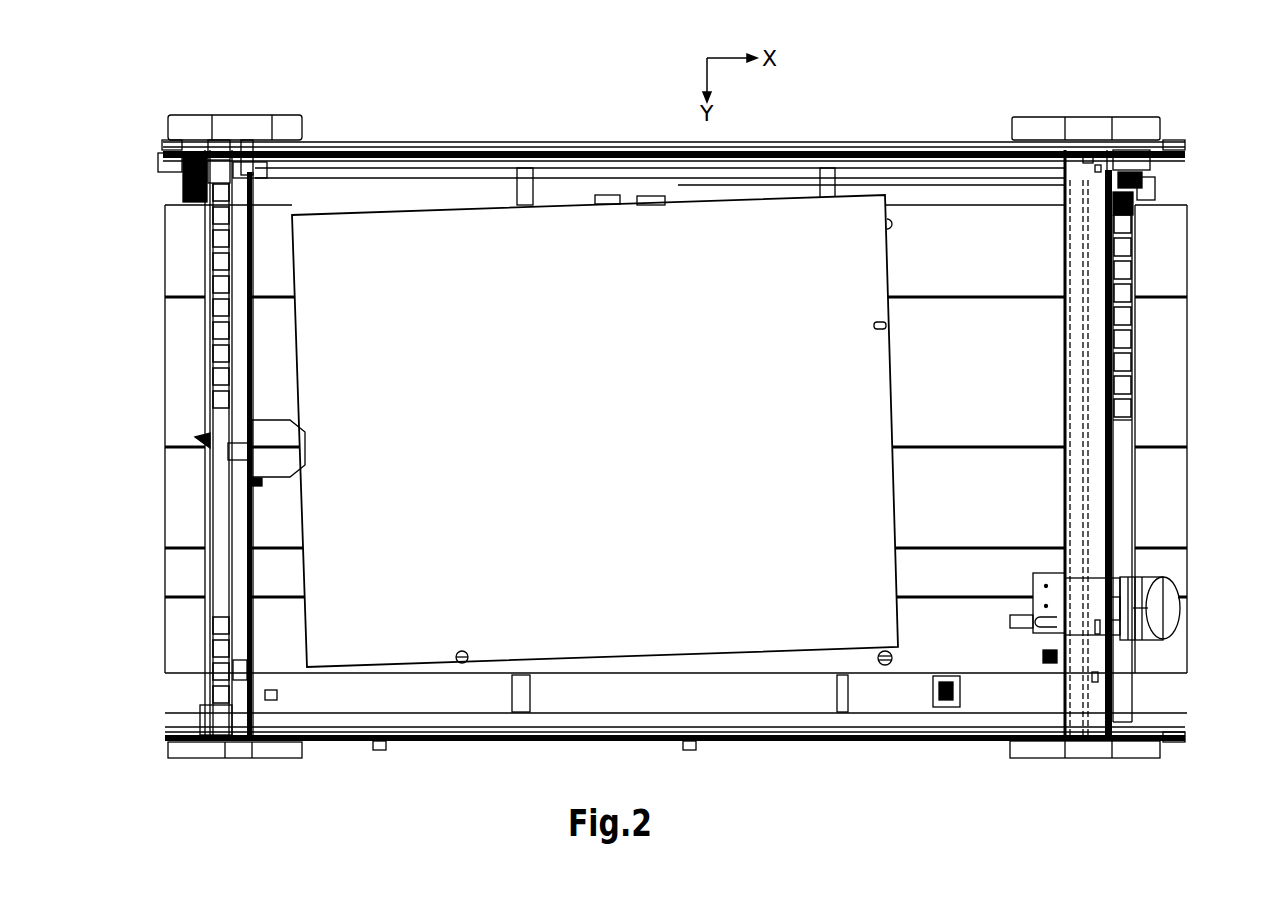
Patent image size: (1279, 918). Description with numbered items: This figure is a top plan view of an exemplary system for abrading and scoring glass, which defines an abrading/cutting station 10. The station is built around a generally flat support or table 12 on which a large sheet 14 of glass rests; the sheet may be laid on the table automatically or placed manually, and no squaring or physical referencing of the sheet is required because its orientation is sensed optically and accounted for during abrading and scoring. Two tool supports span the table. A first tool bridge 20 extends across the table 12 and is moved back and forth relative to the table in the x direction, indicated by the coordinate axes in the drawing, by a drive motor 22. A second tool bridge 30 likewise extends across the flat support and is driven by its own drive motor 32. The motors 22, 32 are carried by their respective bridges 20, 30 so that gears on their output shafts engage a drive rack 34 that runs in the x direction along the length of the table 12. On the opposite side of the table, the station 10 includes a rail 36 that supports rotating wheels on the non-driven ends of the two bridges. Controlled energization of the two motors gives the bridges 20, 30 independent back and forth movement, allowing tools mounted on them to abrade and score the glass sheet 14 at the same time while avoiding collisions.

The abrading/cutting station 10 is at (600, 99).
The table 12 is at (948, 247).
The sheet of glass 14 is at (727, 628).
The first tool bridge 20 is at (1122, 498).
The drive motor 22 is at (1148, 182).
The second tool bridge 30 is at (240, 358).
The drive motor 32 is at (182, 186).
The drive rack 34 is at (385, 143).
The rail 36 is at (452, 745).